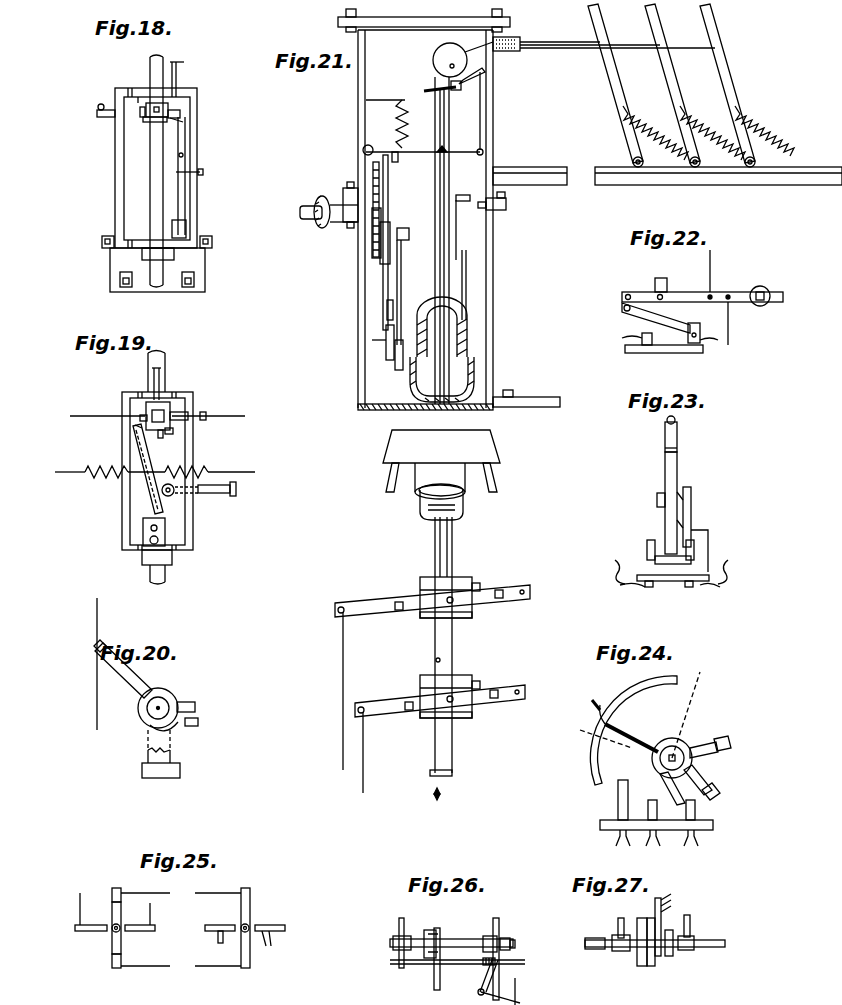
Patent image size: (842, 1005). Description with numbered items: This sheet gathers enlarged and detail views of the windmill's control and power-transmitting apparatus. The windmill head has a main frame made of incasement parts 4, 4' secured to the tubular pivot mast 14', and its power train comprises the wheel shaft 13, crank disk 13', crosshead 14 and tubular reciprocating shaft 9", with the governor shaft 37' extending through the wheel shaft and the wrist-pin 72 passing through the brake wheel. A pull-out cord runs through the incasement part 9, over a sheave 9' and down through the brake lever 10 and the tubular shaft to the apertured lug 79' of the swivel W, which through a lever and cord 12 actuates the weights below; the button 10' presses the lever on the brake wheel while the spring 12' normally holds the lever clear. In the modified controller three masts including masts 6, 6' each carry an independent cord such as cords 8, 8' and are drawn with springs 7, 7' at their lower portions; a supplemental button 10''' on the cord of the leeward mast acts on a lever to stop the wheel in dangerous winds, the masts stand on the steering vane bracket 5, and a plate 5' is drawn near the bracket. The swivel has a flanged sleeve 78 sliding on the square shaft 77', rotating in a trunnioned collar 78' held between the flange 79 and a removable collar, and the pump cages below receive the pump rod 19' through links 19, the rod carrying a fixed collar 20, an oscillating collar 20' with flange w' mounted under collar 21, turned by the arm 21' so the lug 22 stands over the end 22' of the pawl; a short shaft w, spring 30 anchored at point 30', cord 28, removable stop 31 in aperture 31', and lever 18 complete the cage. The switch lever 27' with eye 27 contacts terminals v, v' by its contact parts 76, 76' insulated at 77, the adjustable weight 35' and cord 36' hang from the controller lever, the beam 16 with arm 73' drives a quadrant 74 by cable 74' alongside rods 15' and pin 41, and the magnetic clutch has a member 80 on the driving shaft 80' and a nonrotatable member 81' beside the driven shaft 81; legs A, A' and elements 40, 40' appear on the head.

In FIG. 21, the incasement part 4 is at (411, 20).
In FIG. 21, the incasement part 4' is at (414, 219).
In FIG. 21, the steering vane bracket 5 is at (667, 185).
In FIG. 21, the bracket plate 5' is at (526, 392).
In FIG. 21, the mast 6 is at (606, 85).
In FIG. 21, the mast 6' is at (661, 85).
In FIG. 21, the spring 7 is at (655, 130).
In FIG. 21, the spring 7' is at (712, 130).
In FIG. 21, the cord 8 is at (504, 421).
In FIG. 21, the cord 8' is at (532, 341).
In FIG. 21, the part of the incasement 9 is at (496, 101).
In FIG. 21, the sheave 9' is at (450, 60).
In FIG. 21, the brake lever 10 is at (421, 146).
In FIG. 21, the button or enlargement 10' is at (454, 136).
In FIG. 21, the button 10''' is at (419, 115).
In FIG. 21, the cord 12 is at (339, 702).
In FIG. 22, the cord 12 is at (719, 274).
In FIG. 26, the cord 12 is at (465, 961).
In FIG. 21, the spring 12' is at (387, 124).
In FIG. 21, the wheel shaft 13 is at (325, 209).
In FIG. 21, the crank disk 13' is at (361, 212).
In FIG. 21, the crosshead 14 is at (452, 327).
In FIG. 21, the tubular pivot mast 14' is at (465, 419).
In FIG. 25, the rods or cables 15' is at (115, 909).
In FIG. 25, the beam 16 is at (115, 928).
In FIG. 18, the lever 18 is at (172, 284).
In FIG. 18, the links or short connecting bars 19 is at (151, 257).
In FIG. 18, the pump rod 19' is at (140, 171).
In FIG. 20, the pump rod 19' is at (176, 773).
In FIG. 18, the collar 20 is at (145, 256).
In FIG. 19, the collar 20 is at (160, 484).
In FIG. 18, the oscillating collar 20' is at (140, 120).
In FIG. 19, the oscillating collar 20' is at (182, 424).
In FIG. 20, the oscillating collar 20' is at (161, 702).
In FIG. 18, the collar 21 is at (134, 84).
In FIG. 19, the collar 21 is at (188, 390).
In FIG. 18, the arm 21' is at (93, 122).
In FIG. 19, the arm 21' is at (195, 410).
In FIG. 20, the arm 21' is at (123, 674).
In FIG. 18, the lug or projection 22 is at (194, 105).
In FIG. 19, the lug or projection 22 is at (193, 442).
In FIG. 20, the lug or projection 22 is at (199, 699).
In FIG. 18, the end of the pawl 22' is at (155, 142).
In FIG. 19, the end of the pawl 22' is at (116, 439).
In FIG. 20, the end of the pawl 22' is at (202, 733).
In FIG. 23, the eye 27 is at (686, 434).
In FIG. 24, the eye 27 is at (631, 727).
In FIG. 23, the segment or multiple switch lever 27' is at (686, 503).
In FIG. 24, the segment or multiple switch lever 27' is at (640, 725).
In FIG. 19, the cord 28 is at (62, 472).
In FIG. 19, the spring 30 is at (212, 457).
In FIG. 19, the point 30' is at (264, 467).
In FIG. 18, the removable stop 31 is at (201, 172).
In FIG. 19, the removable stop 31 is at (207, 498).
In FIG. 19, the aperture 31' is at (186, 499).
In FIG. 22, the adjustable weight 35' is at (702, 308).
In FIG. 26, the adjustable weight 35' is at (547, 995).
In FIG. 22, the cord 36' is at (739, 320).
In FIG. 21, the governor shaft 37' is at (307, 197).
In FIG. 21, the block 40 is at (460, 93).
In FIG. 21, the rod 40' is at (488, 111).
In FIG. 25, the pin 41 is at (264, 946).
In FIG. 21, the wrist-pin 72 is at (408, 291).
In FIG. 25, the arm 73' is at (106, 886).
In FIG. 25, the quadrant 74 is at (245, 928).
In FIG. 25, the cable or wire 74' is at (181, 881).
In FIG. 24, the contact part 76 is at (666, 788).
In FIG. 24, the contact part 76' is at (718, 782).
In FIG. 24, the insulation 77 is at (704, 740).
In FIG. 21, the square shaft 77' is at (470, 480).
In FIG. 21, the flanged sleeve 78 is at (463, 638).
In FIG. 21, the trunnioned collar 78' is at (402, 645).
In FIG. 21, the flange 79 is at (482, 725).
In FIG. 21, the apertured lug 79' is at (418, 608).
In FIG. 27, the clutch member 80 is at (637, 951).
In FIG. 27, the driving shaft 80' is at (655, 943).
In FIG. 27, the driven shaft 81 is at (698, 941).
In FIG. 27, the nonrotatable member 81' is at (677, 916).
In FIG. 21, the leg A is at (503, 477).
In FIG. 21, the leg A' is at (425, 461).
In FIG. 21, the swivel W is at (490, 592).
In FIG. 18, the short shaft w is at (182, 67).
In FIG. 19, the short shaft w is at (168, 376).
In FIG. 18, the flange w' is at (135, 108).
In FIG. 19, the flange w' is at (122, 424).
In FIG. 20, the flange w' is at (135, 730).
In FIG. 23, the terminals v is at (671, 570).
In FIG. 24, the terminals v is at (656, 823).
In FIG. 23, the terminals v' is at (658, 552).
In FIG. 24, the terminals v' is at (645, 806).